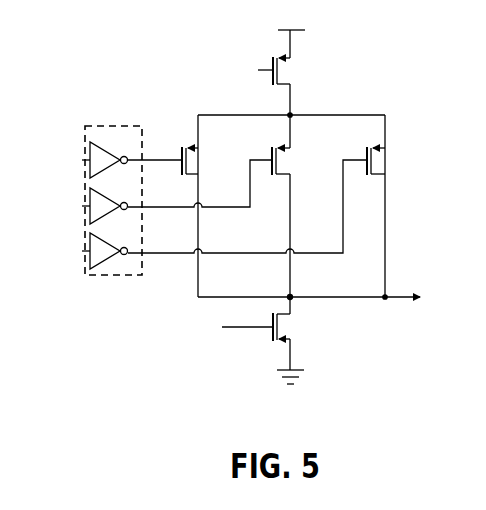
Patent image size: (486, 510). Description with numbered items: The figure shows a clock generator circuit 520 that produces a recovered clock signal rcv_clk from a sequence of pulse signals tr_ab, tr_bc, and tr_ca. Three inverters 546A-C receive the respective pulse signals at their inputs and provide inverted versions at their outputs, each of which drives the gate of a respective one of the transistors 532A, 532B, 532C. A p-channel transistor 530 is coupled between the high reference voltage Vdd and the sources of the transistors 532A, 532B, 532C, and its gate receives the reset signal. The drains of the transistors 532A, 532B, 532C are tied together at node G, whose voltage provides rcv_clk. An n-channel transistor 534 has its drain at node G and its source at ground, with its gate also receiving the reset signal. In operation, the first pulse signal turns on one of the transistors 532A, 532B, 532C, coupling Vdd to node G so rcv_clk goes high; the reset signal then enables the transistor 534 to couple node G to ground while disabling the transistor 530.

The clock generator circuit 520 is at (379, 61).
The transistor 530 is at (298, 71).
The transistor 532A is at (206, 161).
The transistor 532B is at (296, 161).
The transistor 532C is at (391, 161).
The transistor 534 is at (295, 327).
The inverters 546A-C is at (122, 123).